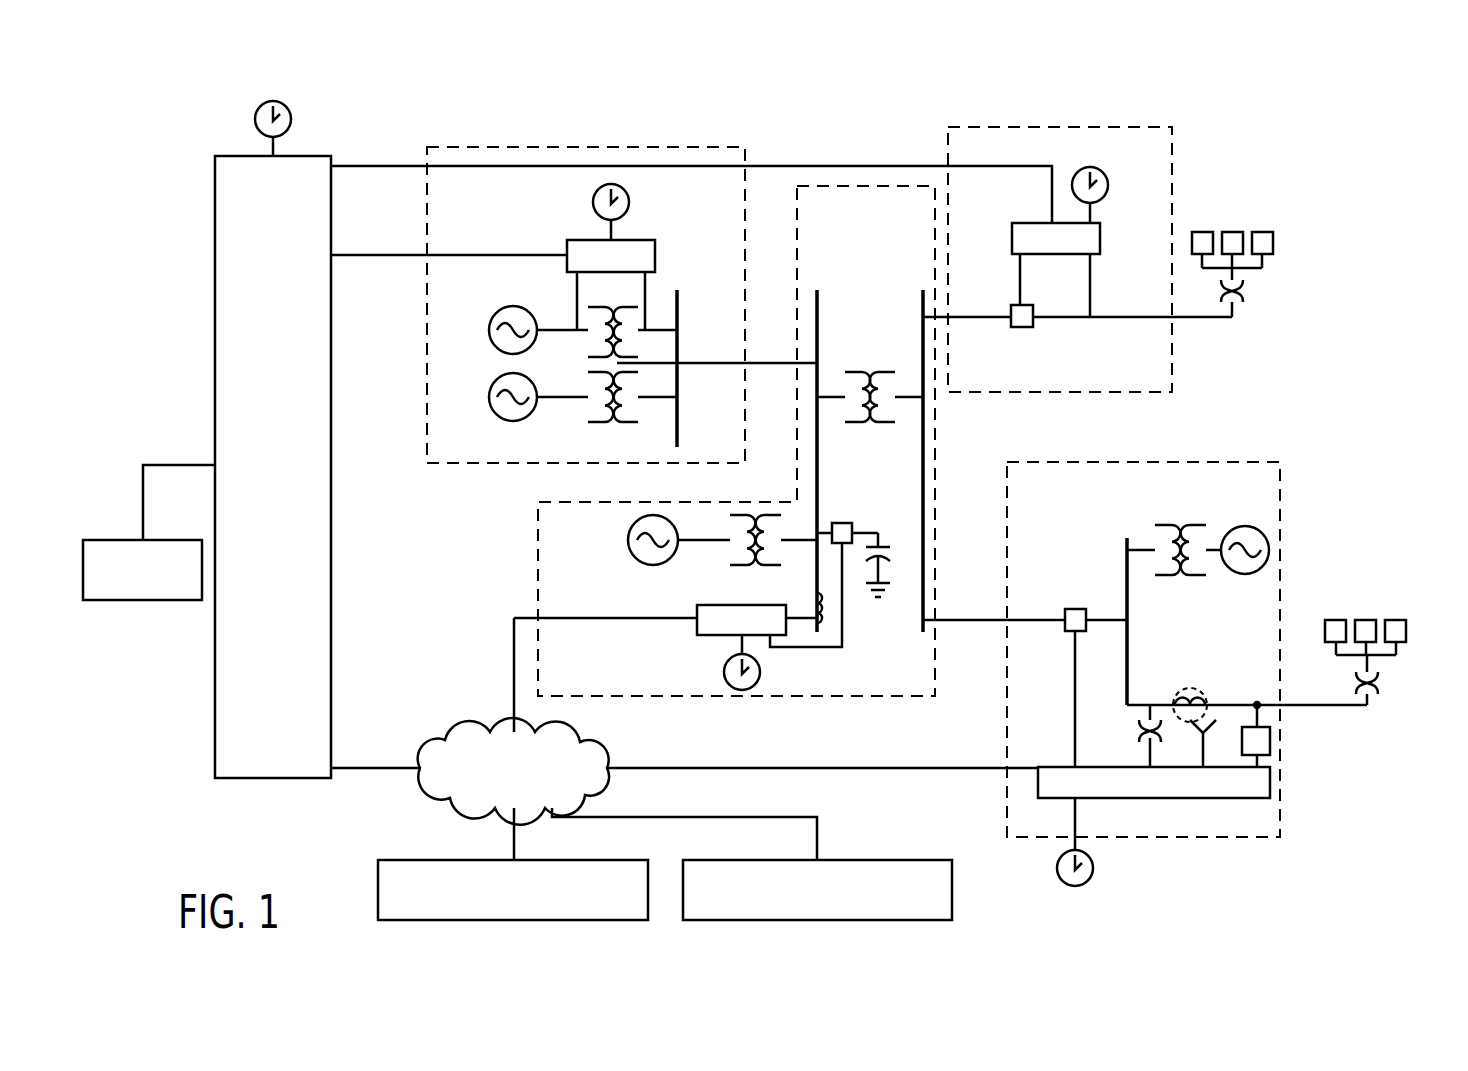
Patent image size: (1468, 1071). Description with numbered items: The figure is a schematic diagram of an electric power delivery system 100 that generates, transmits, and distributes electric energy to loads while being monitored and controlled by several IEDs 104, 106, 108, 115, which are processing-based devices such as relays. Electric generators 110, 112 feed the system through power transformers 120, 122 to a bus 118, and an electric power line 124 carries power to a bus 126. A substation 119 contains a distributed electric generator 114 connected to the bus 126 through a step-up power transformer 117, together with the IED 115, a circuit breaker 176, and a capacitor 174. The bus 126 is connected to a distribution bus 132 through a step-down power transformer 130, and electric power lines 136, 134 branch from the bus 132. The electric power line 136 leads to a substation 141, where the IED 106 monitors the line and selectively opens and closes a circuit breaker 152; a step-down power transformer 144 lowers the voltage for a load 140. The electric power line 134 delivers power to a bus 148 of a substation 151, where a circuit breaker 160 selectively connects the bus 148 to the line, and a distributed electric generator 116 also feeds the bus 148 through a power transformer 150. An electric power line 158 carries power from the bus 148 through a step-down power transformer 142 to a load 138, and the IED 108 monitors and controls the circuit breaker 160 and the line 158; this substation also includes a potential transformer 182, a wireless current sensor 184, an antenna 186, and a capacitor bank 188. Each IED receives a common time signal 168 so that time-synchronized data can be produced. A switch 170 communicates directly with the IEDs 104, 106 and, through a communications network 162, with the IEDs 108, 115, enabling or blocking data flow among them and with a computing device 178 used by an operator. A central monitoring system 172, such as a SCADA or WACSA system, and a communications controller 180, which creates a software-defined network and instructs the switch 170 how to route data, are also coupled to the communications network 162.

The electric power delivery system 100 is at (1278, 164).
The IED 104 is at (580, 240).
The IED 106 is at (1028, 222).
The IED 108 is at (1148, 800).
The electric generator 110 is at (496, 312).
The electric generator 112 is at (496, 379).
The electric generator 114 is at (627, 545).
The IED 115 is at (738, 604).
The electric generator 116 is at (1247, 575).
The power transformer 117 is at (733, 556).
The bus 118 is at (680, 436).
The substation 119 is at (612, 697).
The power transformer 120 is at (591, 349).
The power transformer 122 is at (611, 426).
The electric power line 124 is at (752, 364).
The bus 126 is at (819, 428).
The power transformer 130 is at (866, 372).
The bus 132 is at (920, 603).
The electric power line 134 is at (1025, 622).
The electric power line 136 is at (1005, 320).
The load 138 is at (1370, 618).
The load 140 is at (1276, 241).
The substation 141 is at (1143, 393).
The power transformer 142 is at (1380, 686).
The power transformer 144 is at (1245, 298).
The bus 148 is at (1125, 540).
The power transformer 150 is at (1183, 525).
The substation 151 is at (1218, 840).
The circuit breaker 152 is at (1030, 328).
The electric power line 158 is at (1352, 708).
The circuit breaker 160 is at (1073, 608).
The communications network 162 is at (480, 735).
The common time signal 168 is at (292, 118).
The switch 170 is at (334, 477).
The central monitoring system 172 is at (420, 860).
The capacitor 174 is at (882, 546).
The circuit breaker 176 is at (841, 523).
The computing device 178 is at (160, 602).
The communications controller 180 is at (722, 860).
The potential transformer 182 is at (1136, 730).
The wireless current sensor 184 is at (1178, 698).
The antenna 186 is at (1215, 728).
The capacitor bank 188 is at (1272, 741).